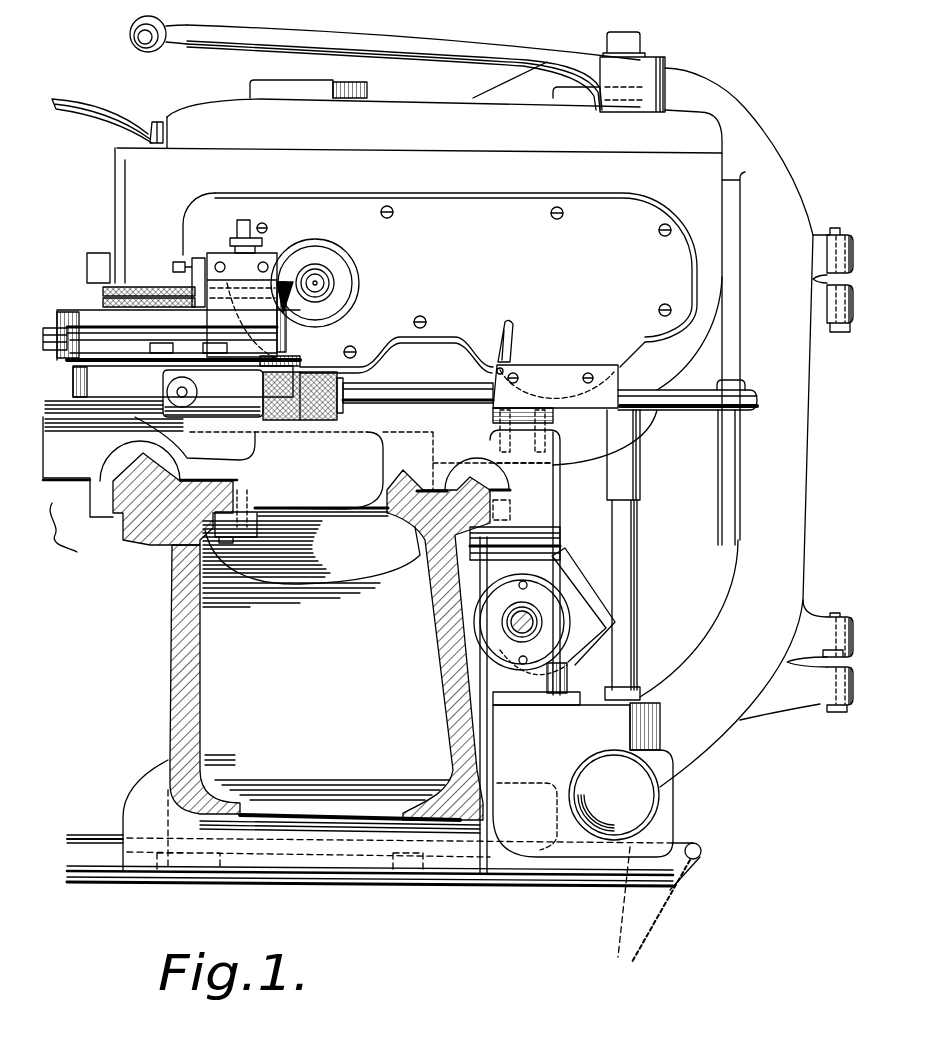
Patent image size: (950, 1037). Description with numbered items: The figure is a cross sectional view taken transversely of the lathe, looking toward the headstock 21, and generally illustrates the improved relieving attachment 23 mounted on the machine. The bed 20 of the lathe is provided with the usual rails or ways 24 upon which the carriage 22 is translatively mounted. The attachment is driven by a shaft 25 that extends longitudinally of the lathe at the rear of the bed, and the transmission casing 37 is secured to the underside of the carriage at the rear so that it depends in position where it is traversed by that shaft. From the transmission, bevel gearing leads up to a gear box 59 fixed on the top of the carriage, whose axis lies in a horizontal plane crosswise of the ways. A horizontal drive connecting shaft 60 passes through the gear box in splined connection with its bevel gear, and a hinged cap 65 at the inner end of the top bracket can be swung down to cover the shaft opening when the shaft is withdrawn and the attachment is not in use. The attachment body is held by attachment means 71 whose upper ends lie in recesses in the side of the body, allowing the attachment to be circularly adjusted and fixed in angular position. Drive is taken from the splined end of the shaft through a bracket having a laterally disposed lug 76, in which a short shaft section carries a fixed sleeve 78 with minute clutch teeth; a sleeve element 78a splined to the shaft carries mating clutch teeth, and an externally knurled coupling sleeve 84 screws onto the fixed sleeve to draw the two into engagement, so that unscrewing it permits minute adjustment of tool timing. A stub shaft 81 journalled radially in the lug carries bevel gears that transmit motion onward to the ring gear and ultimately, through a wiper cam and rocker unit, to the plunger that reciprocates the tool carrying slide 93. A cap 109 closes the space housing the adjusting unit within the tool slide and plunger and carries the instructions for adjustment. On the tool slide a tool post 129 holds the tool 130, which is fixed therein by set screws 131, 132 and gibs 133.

The bed 20 is at (172, 674).
The headstock 21 is at (407, 107).
The carriage 22 is at (80, 470).
The relieving attachment 23 is at (137, 311).
The rails or ways 24 is at (490, 422).
The shaft 25 is at (533, 617).
The transmission casing 37 is at (552, 541).
The gear box 59 is at (549, 382).
The horizontal drive connecting shaft 60 is at (407, 394).
The hinged cap 65 is at (508, 347).
The attachment means 71 is at (205, 347).
The laterally disposed lug 76 is at (228, 406).
The sleeve 78 is at (271, 418).
The sleeve element 78a is at (292, 420).
The stub shaft 81 is at (188, 391).
The coupling sleeve 84 is at (333, 422).
The tool carrying slide 93 is at (183, 381).
The cap 109 is at (103, 291).
The tool post 129 is at (259, 260).
The tool 130 is at (282, 272).
The set screw 131 is at (180, 260).
The set screw 132 is at (247, 222).
The gibs 133 is at (288, 320).